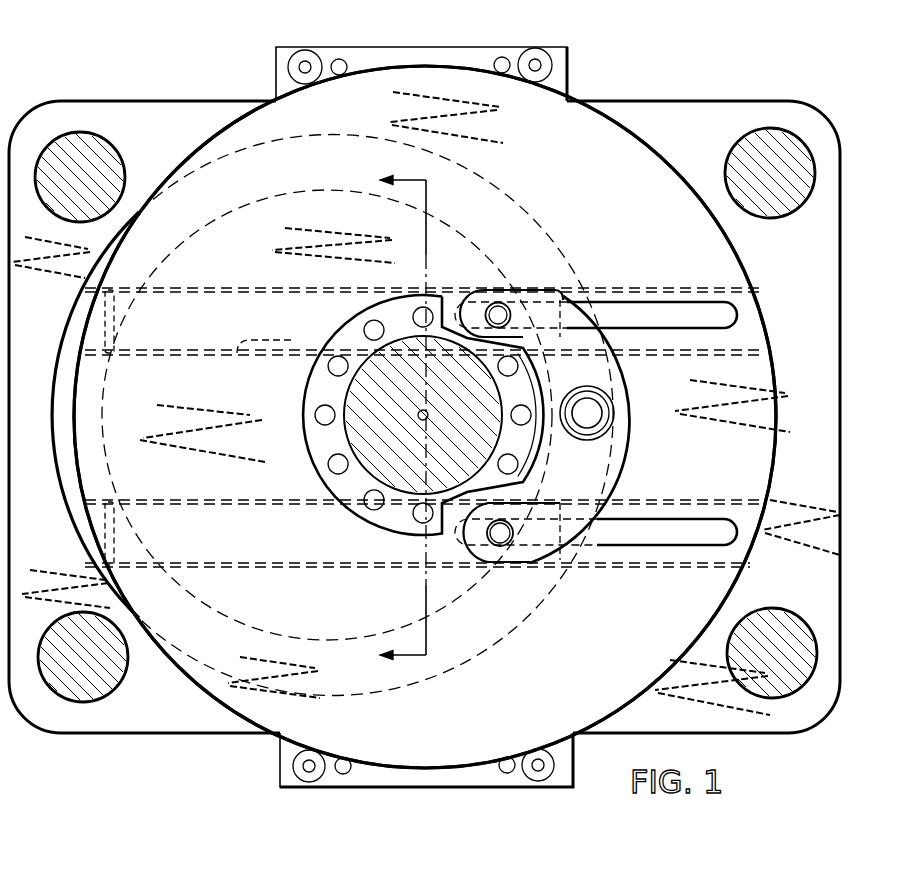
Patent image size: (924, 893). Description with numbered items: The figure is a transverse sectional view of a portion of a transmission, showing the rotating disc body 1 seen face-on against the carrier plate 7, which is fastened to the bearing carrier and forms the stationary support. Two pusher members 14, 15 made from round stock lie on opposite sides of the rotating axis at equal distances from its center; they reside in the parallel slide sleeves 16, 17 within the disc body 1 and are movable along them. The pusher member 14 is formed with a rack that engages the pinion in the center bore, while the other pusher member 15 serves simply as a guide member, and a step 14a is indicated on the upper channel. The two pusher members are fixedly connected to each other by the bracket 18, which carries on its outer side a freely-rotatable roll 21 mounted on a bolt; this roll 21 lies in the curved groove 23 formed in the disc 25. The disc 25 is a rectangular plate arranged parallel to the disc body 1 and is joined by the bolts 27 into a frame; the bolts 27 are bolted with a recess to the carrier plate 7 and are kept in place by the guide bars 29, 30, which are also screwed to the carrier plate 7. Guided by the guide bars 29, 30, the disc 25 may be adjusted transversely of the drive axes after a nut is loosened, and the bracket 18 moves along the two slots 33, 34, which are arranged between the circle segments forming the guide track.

The disc body 1 is at (583, 137).
The carrier plate 7 is at (682, 125).
The pusher member 14 is at (225, 298).
The channel step 14a is at (290, 345).
The pusher member 15 is at (245, 520).
The slide sleeve 16 is at (172, 355).
The slide sleeve 17 is at (295, 570).
The bracket 18 is at (624, 458).
The roll 21 is at (593, 412).
The groove 23 is at (437, 660).
The disc 25 is at (832, 320).
The bolts 27 is at (100, 160).
The guide bar 29 is at (462, 58).
The guide bar 30 is at (398, 770).
The slot 33 is at (652, 317).
The slot 34 is at (630, 533).